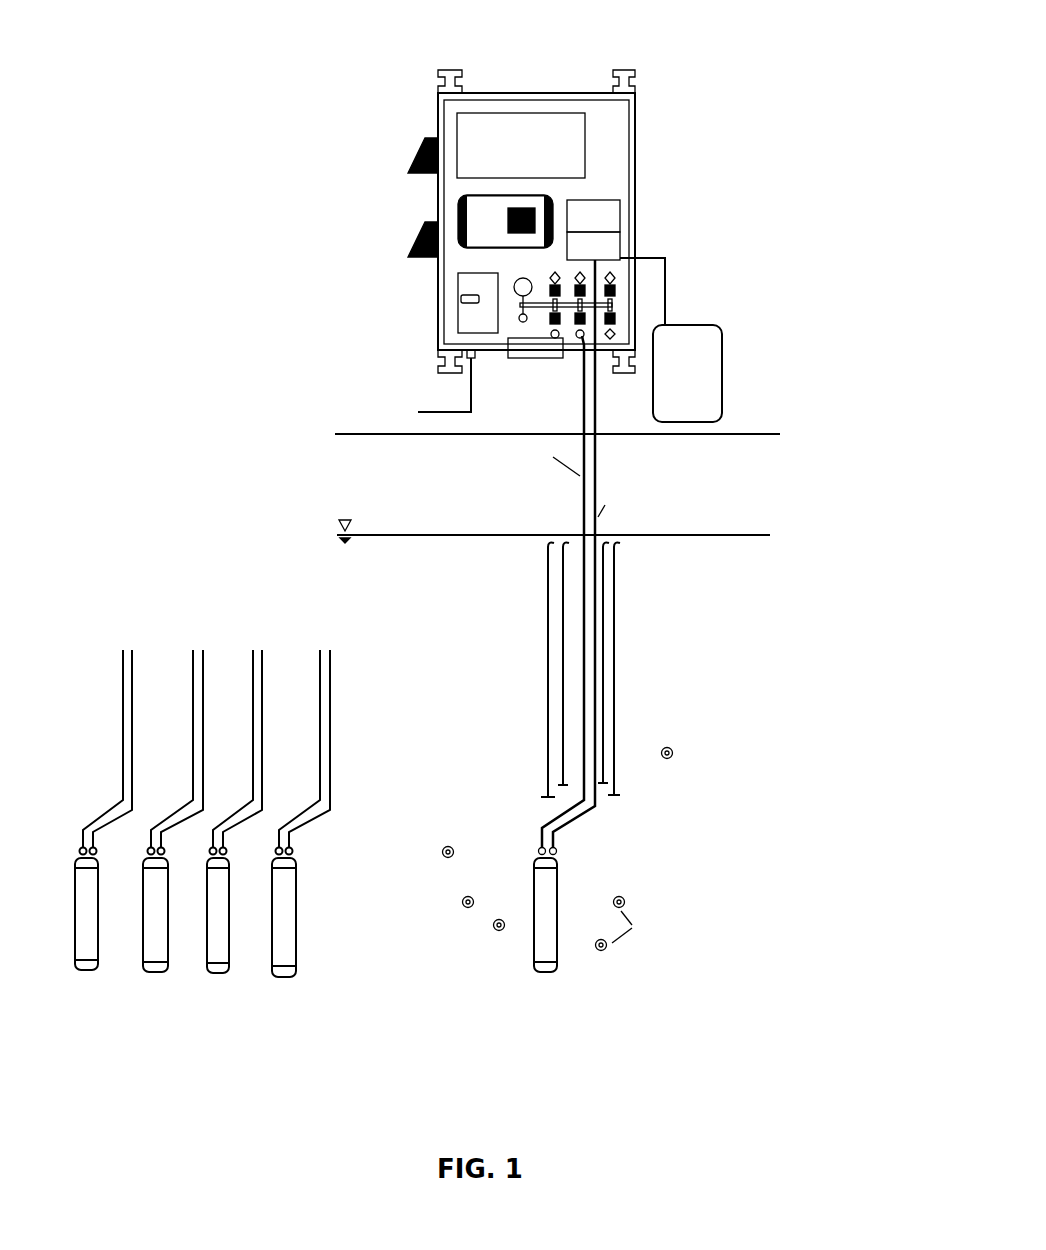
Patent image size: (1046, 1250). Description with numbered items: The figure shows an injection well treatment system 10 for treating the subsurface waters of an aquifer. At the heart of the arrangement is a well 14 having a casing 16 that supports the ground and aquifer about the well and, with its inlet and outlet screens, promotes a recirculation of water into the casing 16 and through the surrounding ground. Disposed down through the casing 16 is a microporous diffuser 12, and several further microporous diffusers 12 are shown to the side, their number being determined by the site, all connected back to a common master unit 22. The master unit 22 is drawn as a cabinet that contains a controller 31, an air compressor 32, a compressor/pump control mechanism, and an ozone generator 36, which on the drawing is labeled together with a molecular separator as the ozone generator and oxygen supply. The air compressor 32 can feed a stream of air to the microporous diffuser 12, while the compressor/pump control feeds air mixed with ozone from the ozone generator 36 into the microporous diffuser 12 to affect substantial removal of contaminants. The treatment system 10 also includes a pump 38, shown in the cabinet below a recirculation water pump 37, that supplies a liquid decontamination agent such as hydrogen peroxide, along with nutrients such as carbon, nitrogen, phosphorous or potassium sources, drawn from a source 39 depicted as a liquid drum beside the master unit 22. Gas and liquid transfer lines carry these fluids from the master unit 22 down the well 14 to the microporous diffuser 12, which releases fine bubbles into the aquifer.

The injection well treatment system 10 is at (268, 472).
The master unit 22 is at (500, 105).
The ozone generator 36 is at (580, 140).
The air compressor 32 is at (478, 206).
The recirculation water pump 37 is at (603, 208).
The pump 38 is at (603, 245).
The controller 31 is at (478, 292).
The source 39 is at (722, 390).
The well 14 is at (563, 603).
The casing 16 is at (548, 699).
The microporous diffuser 12 is at (557, 940).